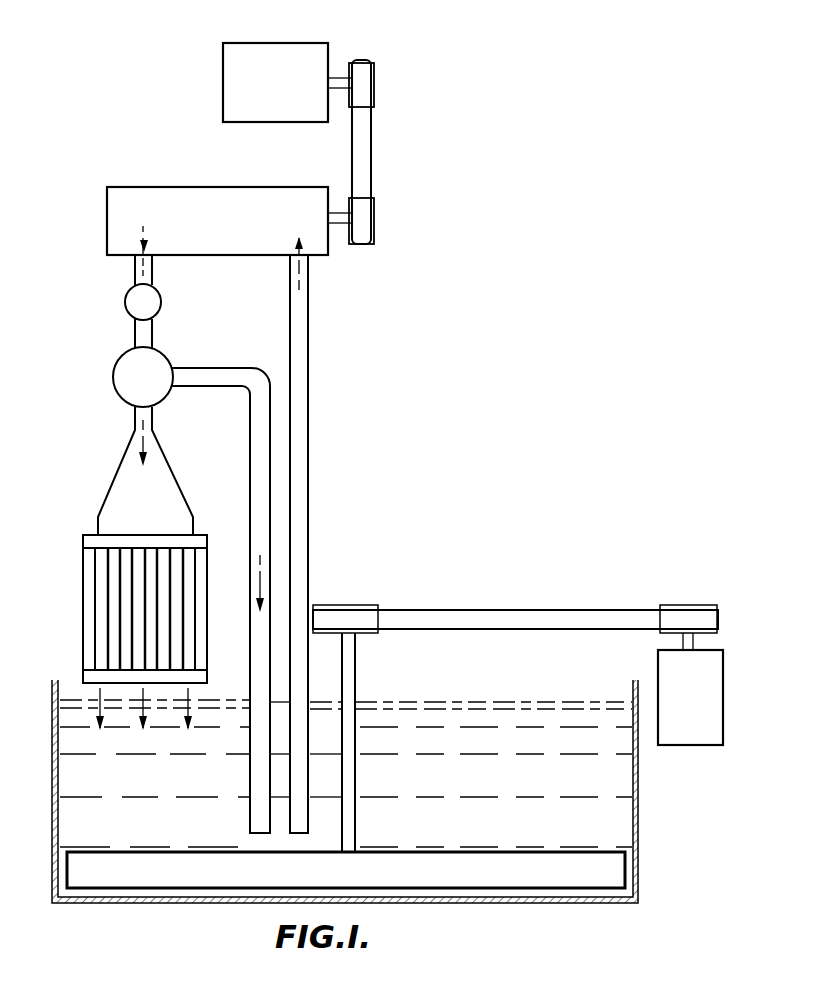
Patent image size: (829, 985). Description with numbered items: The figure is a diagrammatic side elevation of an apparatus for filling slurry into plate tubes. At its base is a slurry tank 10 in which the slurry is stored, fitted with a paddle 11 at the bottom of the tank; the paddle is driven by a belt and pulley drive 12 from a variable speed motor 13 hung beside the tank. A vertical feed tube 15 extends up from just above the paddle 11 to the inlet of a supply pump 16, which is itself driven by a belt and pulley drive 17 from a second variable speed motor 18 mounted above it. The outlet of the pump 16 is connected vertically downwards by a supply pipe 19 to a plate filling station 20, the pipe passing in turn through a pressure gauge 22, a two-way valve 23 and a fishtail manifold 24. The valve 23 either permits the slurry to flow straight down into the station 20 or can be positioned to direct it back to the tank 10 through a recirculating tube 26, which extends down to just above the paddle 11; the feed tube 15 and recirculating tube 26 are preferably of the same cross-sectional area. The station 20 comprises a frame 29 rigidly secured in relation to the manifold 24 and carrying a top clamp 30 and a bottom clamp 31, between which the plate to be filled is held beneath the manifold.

The slurry tank 10 is at (640, 843).
The paddle 11 is at (473, 874).
The belt and pulley drive 12 is at (510, 608).
The variable speed motor 13 is at (682, 726).
The vertical feed tube 15 is at (303, 360).
The supply pump 16 is at (140, 187).
The belt and pulley drive 17 is at (363, 142).
The variable speed motor 18 is at (274, 50).
The supply pipe 19 is at (137, 336).
The plate filling station 20 is at (134, 632).
The pressure gauge 22 is at (128, 295).
The two-way valve 23 is at (126, 383).
The fishtail manifold 24 is at (116, 497).
The recirculating tube 26 is at (250, 767).
The frame 29 is at (87, 635).
The top clamp 30 is at (90, 543).
The bottom clamp 31 is at (193, 673).